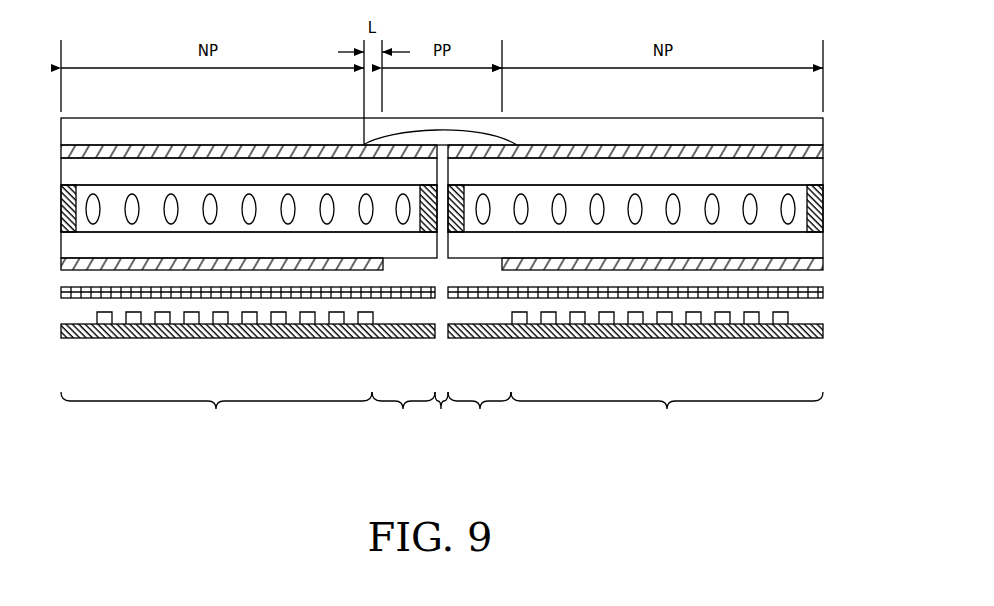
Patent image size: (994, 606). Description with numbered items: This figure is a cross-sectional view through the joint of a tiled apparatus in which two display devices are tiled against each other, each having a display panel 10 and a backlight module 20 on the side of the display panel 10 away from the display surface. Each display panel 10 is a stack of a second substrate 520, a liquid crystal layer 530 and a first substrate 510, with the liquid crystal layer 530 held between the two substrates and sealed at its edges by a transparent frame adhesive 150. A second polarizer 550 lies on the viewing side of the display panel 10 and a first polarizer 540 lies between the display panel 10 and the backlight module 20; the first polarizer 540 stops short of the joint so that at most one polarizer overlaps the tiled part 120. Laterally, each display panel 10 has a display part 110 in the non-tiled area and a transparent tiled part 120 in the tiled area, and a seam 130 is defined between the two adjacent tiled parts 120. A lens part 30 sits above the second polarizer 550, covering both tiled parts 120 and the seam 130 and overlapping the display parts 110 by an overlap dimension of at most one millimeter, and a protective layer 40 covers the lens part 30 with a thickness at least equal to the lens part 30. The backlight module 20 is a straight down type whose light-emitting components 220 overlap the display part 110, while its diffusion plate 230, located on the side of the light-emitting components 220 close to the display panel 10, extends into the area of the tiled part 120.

The display panel 10 is at (488, 211).
The backlight module 20 is at (468, 336).
The lens part 30 is at (437, 141).
The protective layer 40 is at (805, 131).
The display part 110 is at (442, 413).
The tiled part 120 is at (441, 413).
The seam 130 is at (440, 413).
The frame adhesive 150 is at (70, 222).
The light-emitting component 220 is at (138, 318).
The diffusion plate 230 is at (70, 296).
The first substrate 510 is at (810, 246).
The second substrate 520 is at (805, 176).
The liquid crystal layer 530 is at (459, 228).
The first polarizer 540 is at (477, 268).
The second polarizer 550 is at (810, 150).